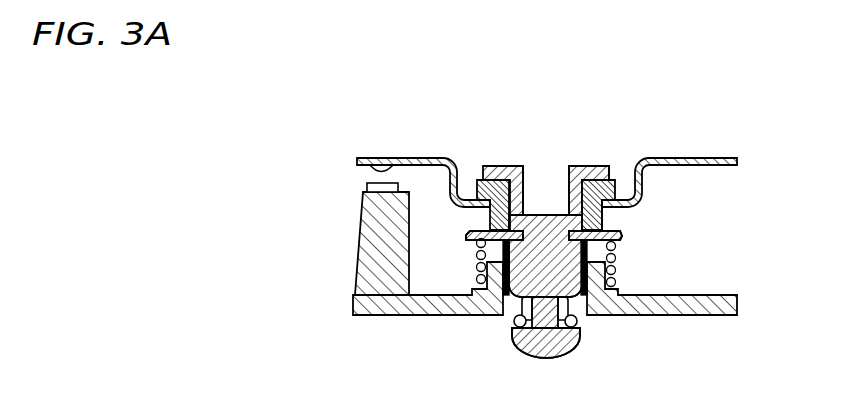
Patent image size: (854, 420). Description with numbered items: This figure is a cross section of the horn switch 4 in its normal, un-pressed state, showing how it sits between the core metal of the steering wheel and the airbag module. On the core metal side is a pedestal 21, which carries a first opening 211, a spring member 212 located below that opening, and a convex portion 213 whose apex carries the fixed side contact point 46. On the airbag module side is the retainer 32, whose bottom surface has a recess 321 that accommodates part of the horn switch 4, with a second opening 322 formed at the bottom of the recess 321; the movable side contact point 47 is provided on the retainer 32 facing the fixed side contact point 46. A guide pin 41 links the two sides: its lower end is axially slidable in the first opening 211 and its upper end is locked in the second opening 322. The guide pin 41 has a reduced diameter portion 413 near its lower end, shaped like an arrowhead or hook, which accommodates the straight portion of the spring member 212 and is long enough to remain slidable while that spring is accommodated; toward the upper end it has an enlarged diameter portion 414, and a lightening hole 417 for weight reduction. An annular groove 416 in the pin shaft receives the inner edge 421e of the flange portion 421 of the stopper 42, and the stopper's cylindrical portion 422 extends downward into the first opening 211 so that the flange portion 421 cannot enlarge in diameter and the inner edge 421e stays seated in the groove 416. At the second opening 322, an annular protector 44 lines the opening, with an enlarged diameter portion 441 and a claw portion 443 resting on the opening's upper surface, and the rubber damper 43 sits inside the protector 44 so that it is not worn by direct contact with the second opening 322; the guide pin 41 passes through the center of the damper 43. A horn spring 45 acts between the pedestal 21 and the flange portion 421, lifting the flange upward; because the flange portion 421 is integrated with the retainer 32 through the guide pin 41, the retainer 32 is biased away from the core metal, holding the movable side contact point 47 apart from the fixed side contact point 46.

The horn switch 4 is at (403, 126).
The pedestal 21 is at (686, 316).
The first opening 211 is at (588, 298).
The spring member 212 is at (514, 322).
The convex portion 213 is at (360, 234).
The retainer 32 is at (689, 158).
The recess 321 is at (459, 168).
The second opening 322 is at (476, 208).
The guide pin 41 is at (522, 353).
The reduced diameter portion 413 is at (556, 357).
The enlarged diameter portion 414 is at (584, 165).
The groove 416 is at (553, 215).
The lightening hole 417 is at (537, 165).
The stopper 42 is at (613, 249).
The flange portion 421 is at (624, 237).
The inner edge 421e is at (545, 256).
The cylindrical portion 422 is at (616, 270).
The damper 43 is at (614, 182).
The protector 44 is at (475, 192).
The enlarged diameter portion 441 is at (618, 203).
The claw portion 443 is at (613, 216).
The horn spring 45 is at (477, 264).
The fixed side contact point 46 is at (398, 186).
The movable side contact point 47 is at (366, 168).